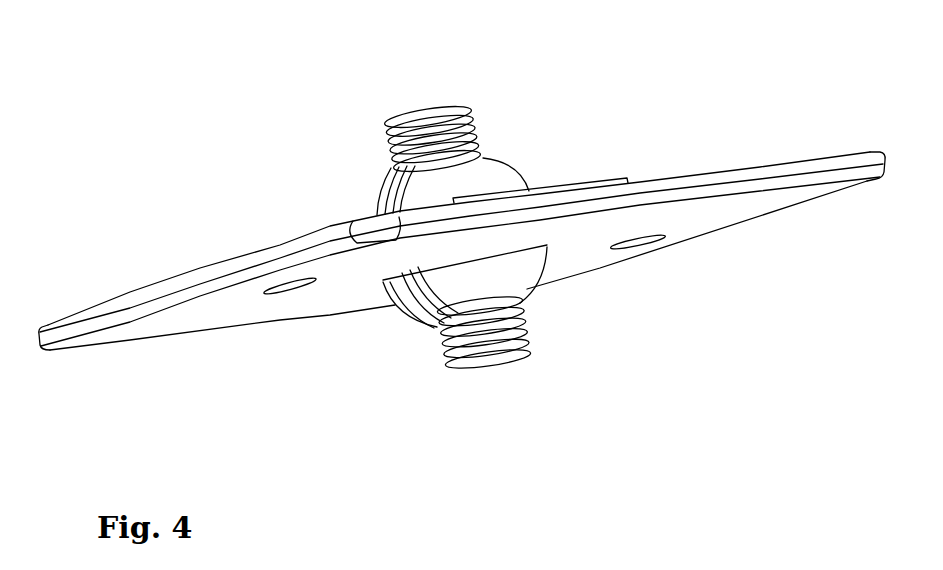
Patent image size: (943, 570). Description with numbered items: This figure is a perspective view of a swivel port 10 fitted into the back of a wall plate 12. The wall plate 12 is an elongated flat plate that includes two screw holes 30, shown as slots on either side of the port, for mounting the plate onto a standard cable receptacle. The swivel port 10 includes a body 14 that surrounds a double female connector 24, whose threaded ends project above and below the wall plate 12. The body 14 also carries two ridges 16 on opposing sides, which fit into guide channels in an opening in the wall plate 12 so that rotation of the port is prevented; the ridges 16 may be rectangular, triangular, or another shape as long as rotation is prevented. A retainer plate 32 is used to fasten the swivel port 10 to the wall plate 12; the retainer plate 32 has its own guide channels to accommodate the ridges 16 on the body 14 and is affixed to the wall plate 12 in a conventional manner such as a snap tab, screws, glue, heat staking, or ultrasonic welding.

The swivel port 10 is at (404, 347).
The wall plate 12 is at (710, 212).
The body 14 is at (530, 265).
The ridge 16 is at (397, 186).
The double female connector 24 is at (477, 124).
The screw hole 30 is at (287, 293).
The retainer plate 32 is at (592, 180).